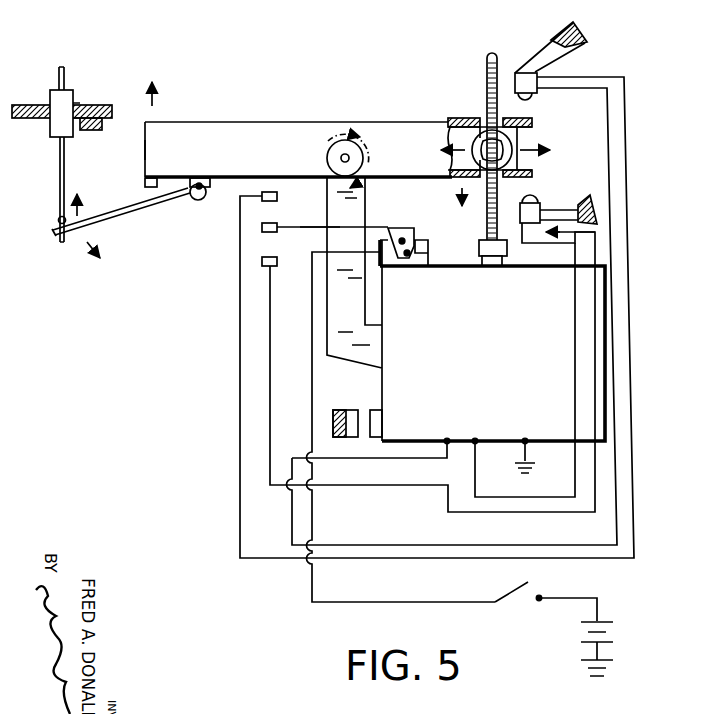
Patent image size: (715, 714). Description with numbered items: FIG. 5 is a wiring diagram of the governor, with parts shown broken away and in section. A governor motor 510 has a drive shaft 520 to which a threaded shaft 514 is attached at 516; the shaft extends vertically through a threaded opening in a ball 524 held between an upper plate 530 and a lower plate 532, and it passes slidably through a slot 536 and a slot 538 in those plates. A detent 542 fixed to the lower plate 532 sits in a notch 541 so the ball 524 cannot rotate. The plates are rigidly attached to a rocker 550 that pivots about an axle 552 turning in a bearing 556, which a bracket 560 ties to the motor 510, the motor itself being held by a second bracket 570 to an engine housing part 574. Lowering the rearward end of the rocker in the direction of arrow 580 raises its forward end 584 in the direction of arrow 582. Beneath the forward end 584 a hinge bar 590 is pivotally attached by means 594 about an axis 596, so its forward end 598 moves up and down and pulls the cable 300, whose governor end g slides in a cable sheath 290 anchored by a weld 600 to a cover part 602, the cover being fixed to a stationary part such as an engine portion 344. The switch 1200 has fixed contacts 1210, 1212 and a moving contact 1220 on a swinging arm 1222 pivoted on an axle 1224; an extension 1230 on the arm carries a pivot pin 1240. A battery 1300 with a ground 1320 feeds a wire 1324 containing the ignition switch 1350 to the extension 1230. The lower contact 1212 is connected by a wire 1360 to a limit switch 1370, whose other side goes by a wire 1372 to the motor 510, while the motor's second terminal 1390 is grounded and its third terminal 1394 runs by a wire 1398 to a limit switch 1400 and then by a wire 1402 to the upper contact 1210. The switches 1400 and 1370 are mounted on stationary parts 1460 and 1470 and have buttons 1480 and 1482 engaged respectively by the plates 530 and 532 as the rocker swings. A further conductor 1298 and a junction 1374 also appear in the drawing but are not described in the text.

The cover of the governor assembly power unit 602 is at (25, 104).
The cable sheath 290 is at (66, 98).
The weld 600 is at (75, 104).
The portion of the engine 344 is at (86, 131).
The cable 300 is at (60, 161).
The governor end of the cable g is at (60, 207).
The forward end of the bar 598 is at (54, 234).
The hinge bar 590 is at (108, 226).
The pivotal attaching means 594 is at (212, 199).
The hinge axis 596 is at (200, 186).
The arrow 582 is at (160, 103).
The rocker 550 is at (207, 122).
The forward end of the rocker 584 is at (145, 150).
The axle 552 is at (343, 155).
The bearing 556 is at (327, 158).
The bracket 560 is at (344, 365).
The second bracket 570 is at (380, 410).
The part of the outer housing of the engine 574 is at (336, 437).
The threaded shaft 514 is at (487, 87).
The upper plate 530 is at (534, 123).
The slot in the upper plate 536 is at (534, 130).
The slot in the lower plate 538 is at (534, 170).
The lower plate 532 is at (534, 176).
The ball 524 is at (450, 134).
The detent 542 is at (450, 162).
The notch 541 is at (511, 148).
The arrow 580 is at (461, 202).
The attachment of threaded shaft to drive shaft 516 is at (508, 250).
The drive shaft 520 is at (478, 262).
The axle 1224 is at (400, 226).
The extension 1230 is at (405, 237).
The pivot pin 1240 is at (411, 251).
The governor motor 510 is at (562, 428).
The second terminal of the motor 1390 is at (525, 440).
The upper fixed contact 1210 is at (277, 197).
The moving contact 1220 is at (262, 228).
The switch 1200 is at (256, 237).
The lower fixed contact 1212 is at (262, 262).
The swinging arm 1222 is at (308, 230).
The wire 1402 is at (238, 340).
The conductor 1298 is at (617, 345).
The third terminal of the motor 1394 is at (447, 441).
The wire 1398 is at (340, 545).
The wire 1360 is at (596, 328).
The junction 1374 is at (475, 441).
The wire 1372 is at (575, 310).
The limit switch 1370 is at (576, 233).
The movable button 1480 is at (537, 93).
The limit switch 1400 is at (550, 68).
The stationary part of the vehicle 1460 is at (580, 33).
The movable button 1482 is at (538, 204).
The stationary part of the vehicle 1470 is at (597, 205).
The wire 1324 is at (443, 601).
The ignition switch 1350 is at (521, 600).
The battery 1300 is at (601, 620).
The ground 1320 is at (605, 662).